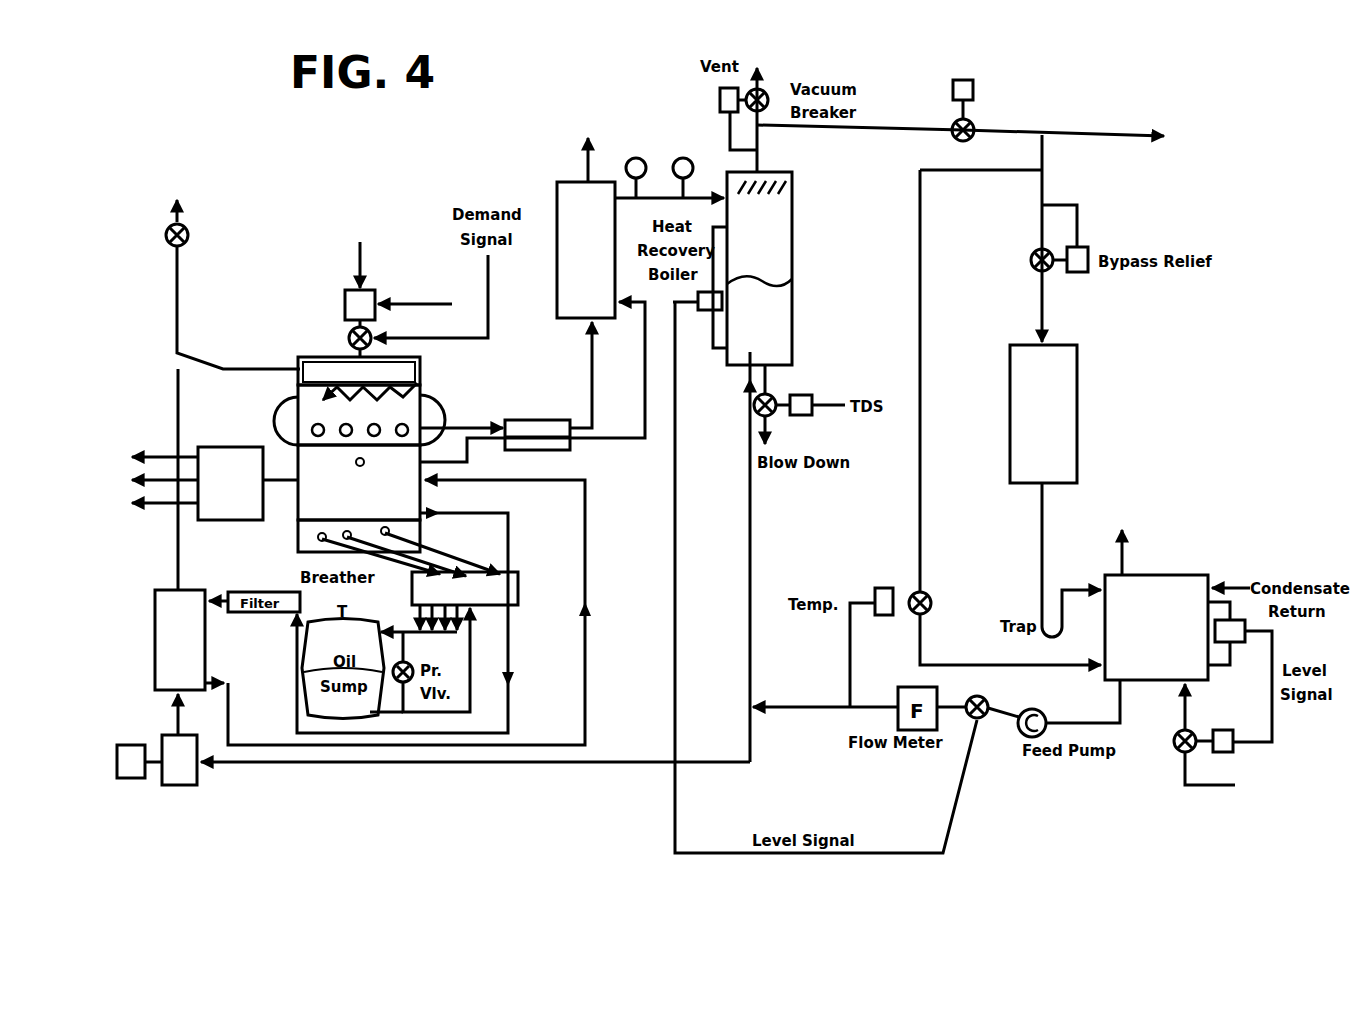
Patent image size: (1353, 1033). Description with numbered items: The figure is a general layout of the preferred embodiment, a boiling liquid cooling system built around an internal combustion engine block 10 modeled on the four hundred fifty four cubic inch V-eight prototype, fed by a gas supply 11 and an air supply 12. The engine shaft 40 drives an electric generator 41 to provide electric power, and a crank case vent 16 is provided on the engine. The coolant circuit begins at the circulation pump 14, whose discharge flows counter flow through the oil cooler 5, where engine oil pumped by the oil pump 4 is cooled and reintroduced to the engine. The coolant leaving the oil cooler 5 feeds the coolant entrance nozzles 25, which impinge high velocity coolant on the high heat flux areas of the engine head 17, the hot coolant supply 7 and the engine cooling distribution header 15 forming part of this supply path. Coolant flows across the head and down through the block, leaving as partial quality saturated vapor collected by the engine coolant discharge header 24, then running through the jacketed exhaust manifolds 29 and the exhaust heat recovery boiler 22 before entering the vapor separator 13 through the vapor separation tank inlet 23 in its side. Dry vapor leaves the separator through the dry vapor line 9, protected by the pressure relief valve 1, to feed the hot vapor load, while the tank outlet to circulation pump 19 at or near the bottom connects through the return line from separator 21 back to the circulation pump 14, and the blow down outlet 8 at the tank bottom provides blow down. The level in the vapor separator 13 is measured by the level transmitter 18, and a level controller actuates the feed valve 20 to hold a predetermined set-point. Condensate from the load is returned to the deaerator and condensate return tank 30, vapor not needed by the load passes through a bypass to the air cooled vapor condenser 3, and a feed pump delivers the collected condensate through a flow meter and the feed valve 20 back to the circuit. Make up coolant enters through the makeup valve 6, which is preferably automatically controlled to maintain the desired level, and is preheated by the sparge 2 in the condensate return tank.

The pressure relief valve 1 is at (950, 86).
The sparge for makeup preheating 2 is at (912, 594).
The air cooled vapor condenser for bypass 3 is at (1077, 397).
The oil pump 4 is at (473, 571).
The oil cooler 5 is at (172, 608).
The makeup valve 6 is at (1176, 756).
The hot coolant supply 7 is at (175, 384).
The blow down outlet 8 is at (782, 368).
The dry vapor line 9 is at (1105, 136).
The engine block 10 is at (313, 487).
The gas supply 11 is at (360, 244).
The air supply 12 is at (398, 312).
The vapor separator 13 is at (792, 216).
The circulation pump 14 is at (195, 782).
The engine cooling distribution header 15 is at (335, 388).
The crank case vent 16 is at (188, 244).
The engine head 17 is at (415, 414).
The level transmitter 18 is at (705, 313).
The tank outlet to circulation pump 19 is at (745, 372).
The feed valve 20 is at (984, 716).
The return line from separator 21 is at (750, 528).
The exhaust heat recovery boiler 22 is at (573, 196).
The vapor separation tank inlet 23 is at (722, 190).
The engine coolant discharge header 24 is at (608, 440).
The coolant entrance nozzle 25 is at (425, 390).
The jacketed exhaust manifold 29 is at (548, 450).
The condensate receiver tank 30 is at (1200, 573).
The engine shaft 40 is at (277, 480).
The electric generator 41 is at (210, 520).